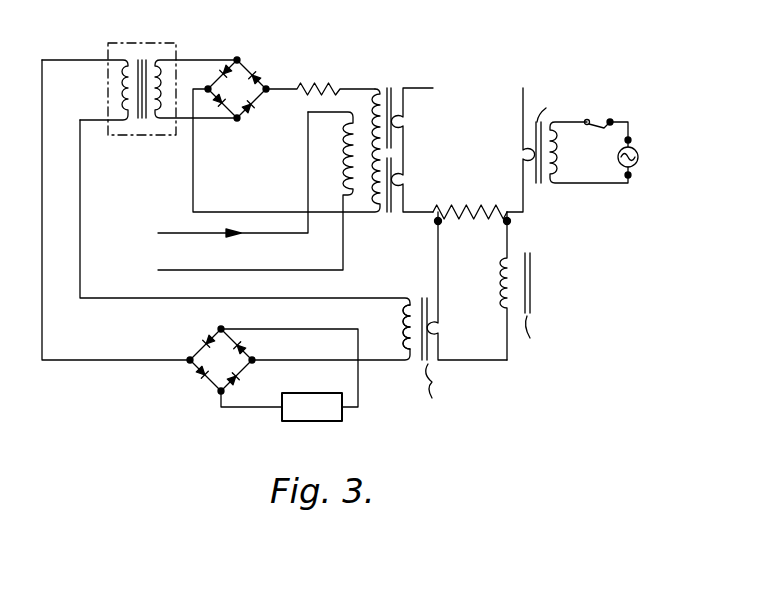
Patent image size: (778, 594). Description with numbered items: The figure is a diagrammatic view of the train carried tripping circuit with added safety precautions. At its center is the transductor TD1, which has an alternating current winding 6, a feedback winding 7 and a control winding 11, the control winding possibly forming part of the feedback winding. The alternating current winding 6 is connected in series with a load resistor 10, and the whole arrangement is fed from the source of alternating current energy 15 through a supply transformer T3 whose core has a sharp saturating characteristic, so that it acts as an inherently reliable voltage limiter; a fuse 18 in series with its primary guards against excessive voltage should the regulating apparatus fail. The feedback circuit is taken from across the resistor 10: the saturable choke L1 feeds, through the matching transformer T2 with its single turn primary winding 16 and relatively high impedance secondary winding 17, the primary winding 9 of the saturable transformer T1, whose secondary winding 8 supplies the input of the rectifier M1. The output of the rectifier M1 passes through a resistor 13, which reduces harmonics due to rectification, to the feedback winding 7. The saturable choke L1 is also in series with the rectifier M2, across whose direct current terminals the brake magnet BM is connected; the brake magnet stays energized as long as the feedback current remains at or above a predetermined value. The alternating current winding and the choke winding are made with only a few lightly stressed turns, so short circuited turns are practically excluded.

The primary winding 9 is at (120, 74).
The secondary winding 8 is at (160, 112).
The resistor 13 is at (324, 84).
The feedback winding 7 is at (376, 88).
The control winding 11 is at (342, 134).
The alternating current winding 6 is at (412, 125).
The resistor 10 is at (475, 206).
The primary winding 16 is at (445, 328).
The secondary winding 17 is at (401, 316).
The fuse 18 is at (599, 129).
The source of alternating current energy 15 is at (638, 157).
The saturable transformer T1 is at (152, 43).
The rectifier M1 is at (258, 78).
The transductor TD1 is at (390, 88).
The matching transformer T2 is at (425, 298).
The transformer T3 is at (538, 183).
The saturable choke L1 is at (533, 262).
The rectifier M2 is at (194, 375).
The brake magnet BM is at (289, 375).